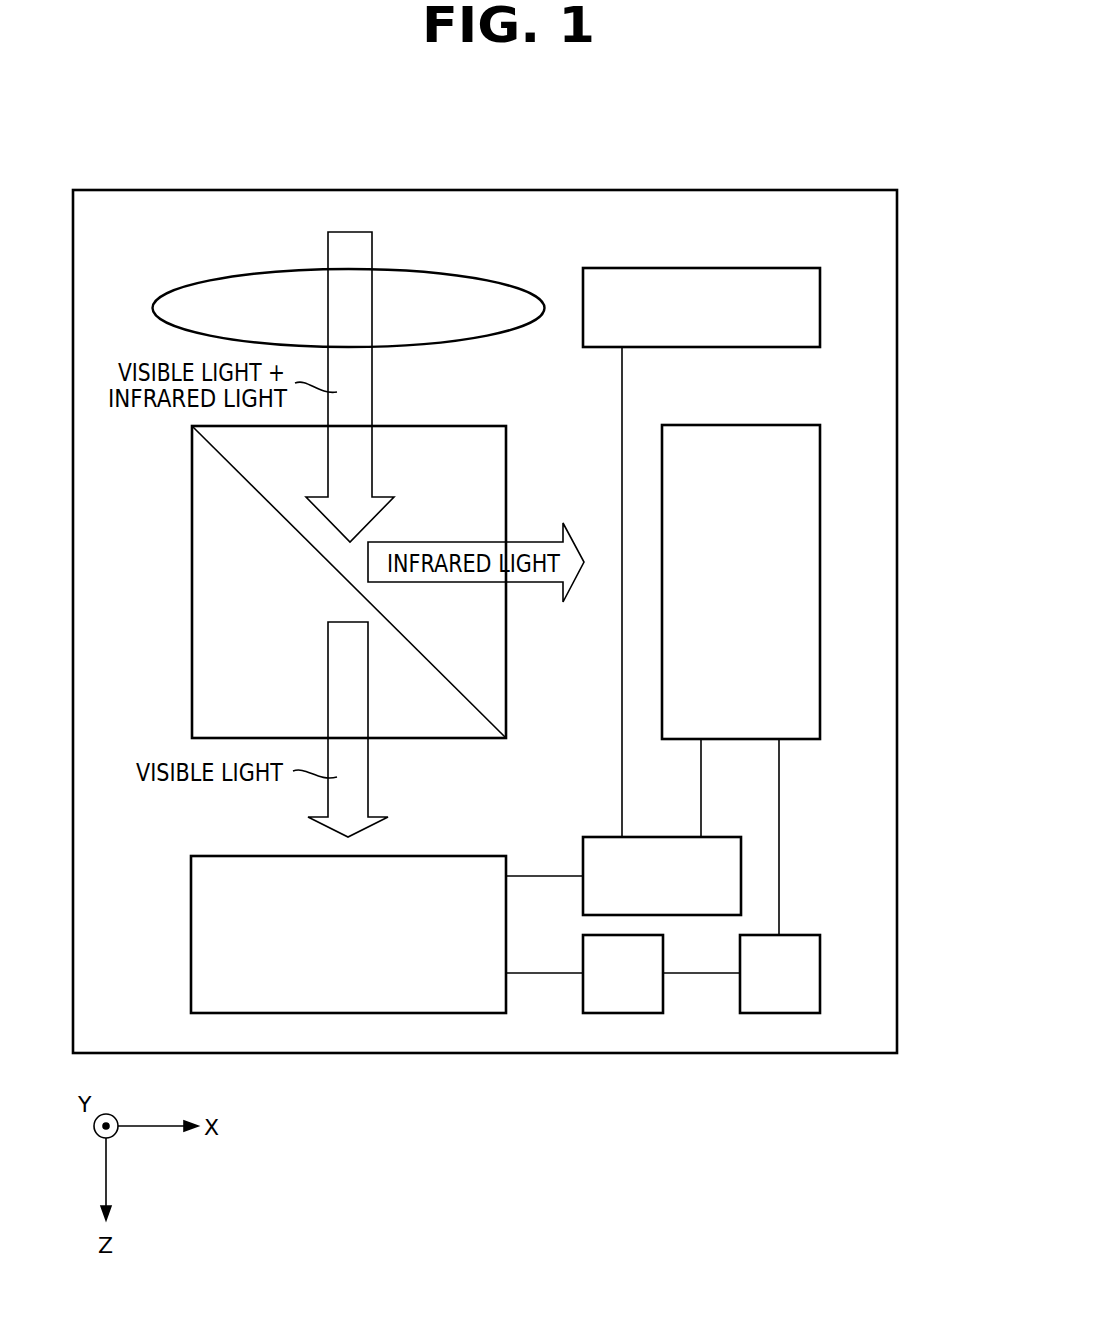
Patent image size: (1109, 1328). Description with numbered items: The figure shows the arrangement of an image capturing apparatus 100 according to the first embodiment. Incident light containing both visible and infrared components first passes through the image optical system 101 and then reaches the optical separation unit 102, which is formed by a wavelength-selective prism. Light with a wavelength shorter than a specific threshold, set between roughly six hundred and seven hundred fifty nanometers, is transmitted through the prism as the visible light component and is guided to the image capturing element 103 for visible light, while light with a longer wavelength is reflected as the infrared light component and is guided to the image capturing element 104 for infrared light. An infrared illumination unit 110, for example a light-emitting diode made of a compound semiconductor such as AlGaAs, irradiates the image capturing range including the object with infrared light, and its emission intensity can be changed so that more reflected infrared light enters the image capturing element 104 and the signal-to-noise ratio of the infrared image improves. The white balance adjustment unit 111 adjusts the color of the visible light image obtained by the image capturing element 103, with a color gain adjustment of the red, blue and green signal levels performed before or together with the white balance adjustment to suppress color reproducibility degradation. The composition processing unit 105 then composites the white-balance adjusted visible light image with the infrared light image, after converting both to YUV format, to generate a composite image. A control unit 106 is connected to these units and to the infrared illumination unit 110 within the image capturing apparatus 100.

The image capturing apparatus 100 is at (593, 158).
The image optical system 101 is at (188, 303).
The optical separation unit 102 is at (214, 618).
The image capturing element (visible light) 103 is at (373, 990).
The image capturing element (infrared light) 104 is at (773, 592).
The composition processing unit 105 is at (781, 990).
The control unit 106 is at (603, 853).
The infrared illumination unit 110 is at (773, 305).
The white balance adjustment unit 111 is at (623, 990).